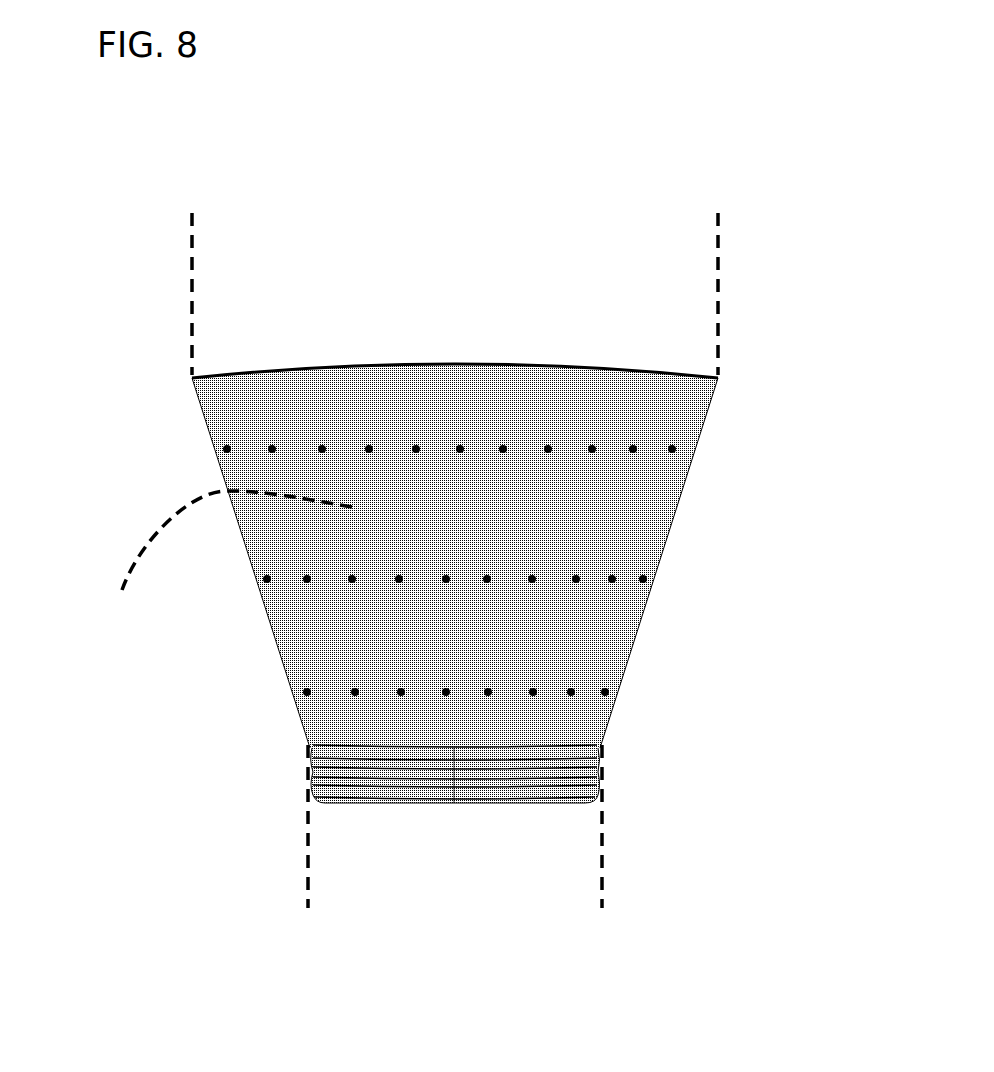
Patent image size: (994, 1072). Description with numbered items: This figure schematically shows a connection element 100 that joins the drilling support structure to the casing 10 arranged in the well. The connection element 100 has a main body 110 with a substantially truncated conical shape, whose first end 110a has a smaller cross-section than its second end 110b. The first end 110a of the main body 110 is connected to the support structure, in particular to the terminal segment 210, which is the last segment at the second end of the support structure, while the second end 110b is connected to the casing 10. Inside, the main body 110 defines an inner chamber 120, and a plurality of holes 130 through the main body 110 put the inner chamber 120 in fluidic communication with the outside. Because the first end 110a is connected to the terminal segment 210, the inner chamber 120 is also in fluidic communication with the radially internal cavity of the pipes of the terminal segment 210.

The casing 10 is at (482, 277).
The connection element 100 is at (474, 601).
The main body 110 is at (678, 518).
The first end 110a is at (600, 755).
The second end 110b is at (718, 378).
The inner chamber 120 is at (221, 560).
The holes 130 is at (548, 449).
The terminal segment 210 is at (473, 896).